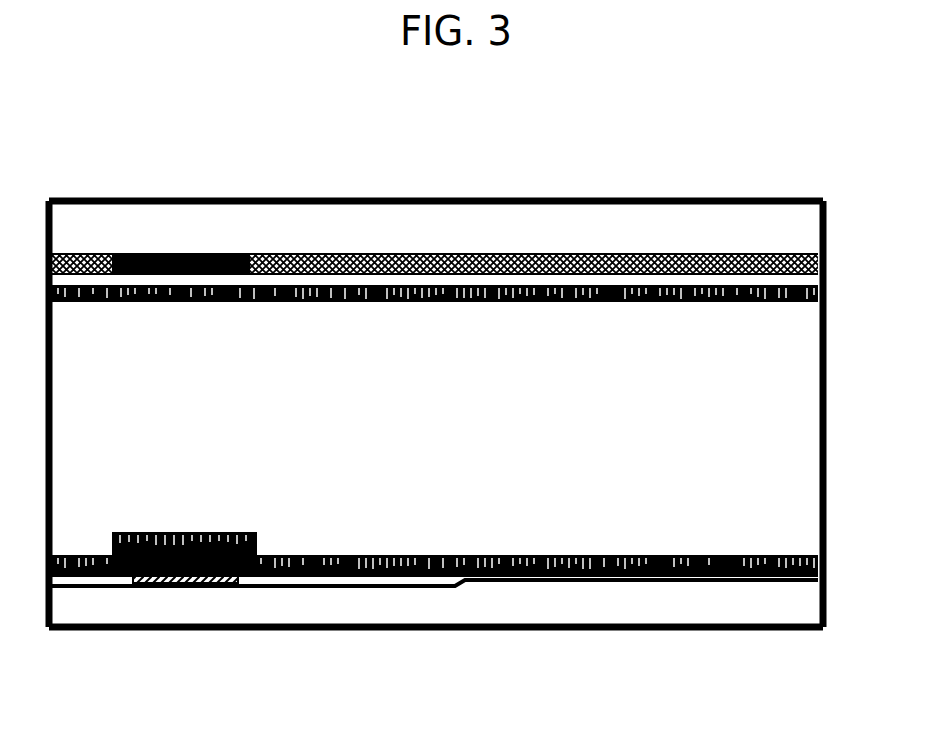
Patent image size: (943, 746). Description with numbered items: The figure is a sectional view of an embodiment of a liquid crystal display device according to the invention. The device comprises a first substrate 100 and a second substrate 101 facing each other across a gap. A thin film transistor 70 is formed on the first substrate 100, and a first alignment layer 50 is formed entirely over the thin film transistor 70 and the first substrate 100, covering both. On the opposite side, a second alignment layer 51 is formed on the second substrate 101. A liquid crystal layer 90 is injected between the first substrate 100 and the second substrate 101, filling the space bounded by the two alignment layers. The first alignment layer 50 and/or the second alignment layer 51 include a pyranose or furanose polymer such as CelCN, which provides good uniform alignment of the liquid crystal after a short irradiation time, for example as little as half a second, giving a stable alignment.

The first alignment layer 50 is at (638, 583).
The second alignment layer 51 is at (338, 285).
The thin film transistor 70 is at (182, 585).
The liquid crystal layer 90 is at (787, 447).
The first substrate 100 is at (408, 597).
The second substrate 101 is at (530, 235).